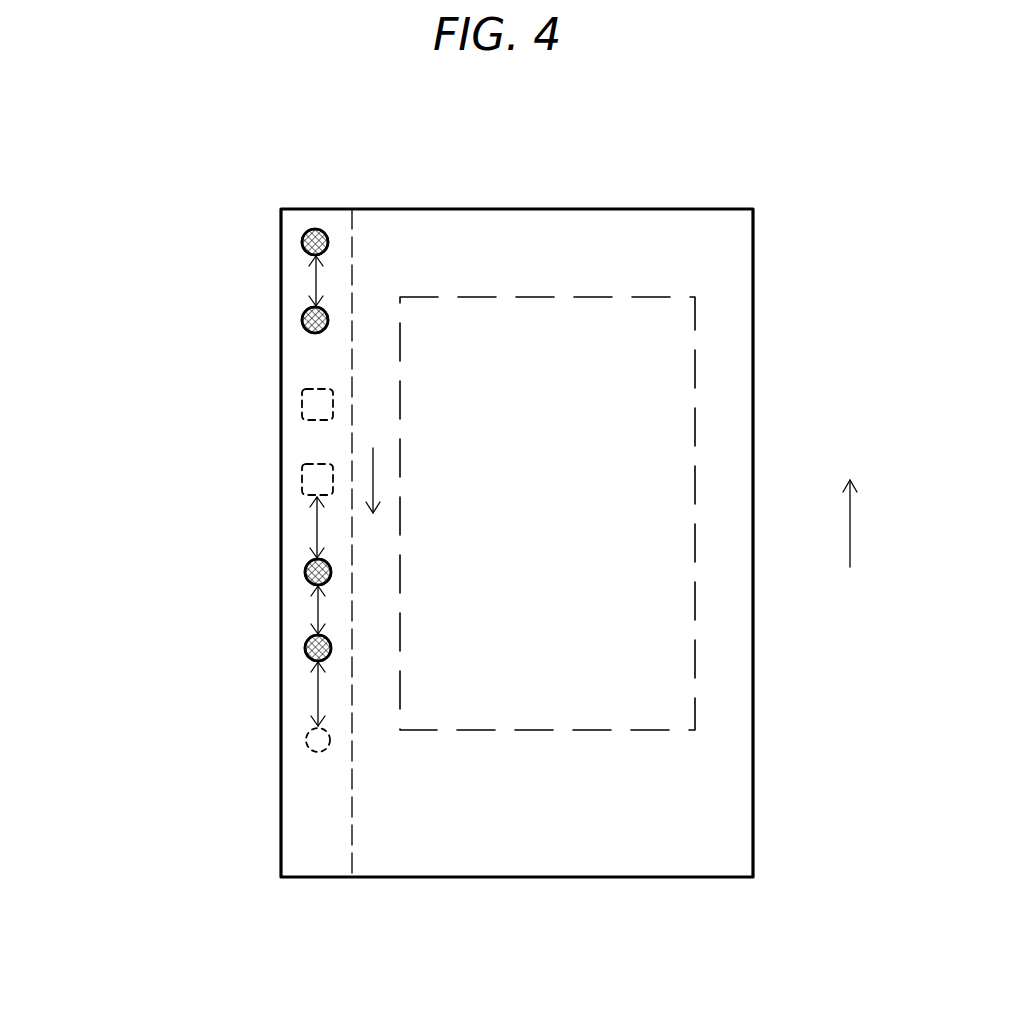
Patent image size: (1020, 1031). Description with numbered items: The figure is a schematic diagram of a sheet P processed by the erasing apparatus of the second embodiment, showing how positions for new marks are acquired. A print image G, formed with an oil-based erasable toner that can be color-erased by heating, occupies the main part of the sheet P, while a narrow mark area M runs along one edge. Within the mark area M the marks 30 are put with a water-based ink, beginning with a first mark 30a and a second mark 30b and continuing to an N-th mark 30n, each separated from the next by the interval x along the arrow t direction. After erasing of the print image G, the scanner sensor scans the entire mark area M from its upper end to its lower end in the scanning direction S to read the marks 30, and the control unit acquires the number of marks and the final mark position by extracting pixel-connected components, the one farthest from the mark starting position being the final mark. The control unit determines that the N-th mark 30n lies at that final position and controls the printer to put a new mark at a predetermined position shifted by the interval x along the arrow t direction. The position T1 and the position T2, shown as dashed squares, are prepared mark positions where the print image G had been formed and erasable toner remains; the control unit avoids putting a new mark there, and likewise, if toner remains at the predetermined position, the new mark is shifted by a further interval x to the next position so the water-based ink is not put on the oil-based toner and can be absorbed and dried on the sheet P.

The marks 30 is at (151, 270).
The first mark 30a is at (302, 245).
The second mark 30b is at (302, 328).
The N-th mark 30n is at (305, 582).
The position T1 is at (300, 402).
The position T2 is at (300, 480).
The interval x is at (314, 280).
The arrow t direction t is at (373, 480).
The mark area M is at (348, 190).
The sheet P is at (753, 300).
The print image G is at (695, 418).
The scanning direction S is at (850, 522).